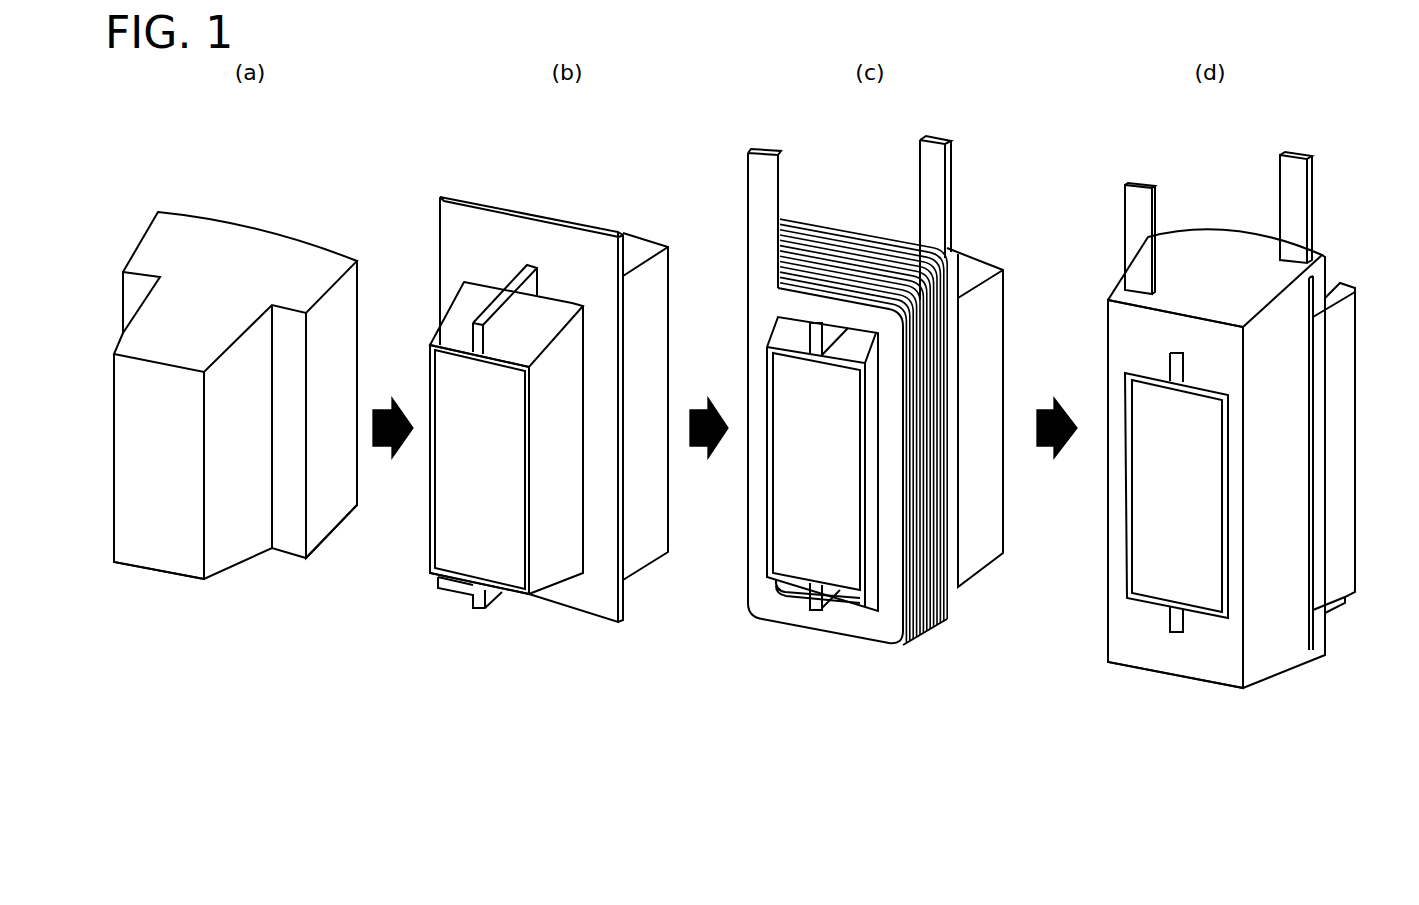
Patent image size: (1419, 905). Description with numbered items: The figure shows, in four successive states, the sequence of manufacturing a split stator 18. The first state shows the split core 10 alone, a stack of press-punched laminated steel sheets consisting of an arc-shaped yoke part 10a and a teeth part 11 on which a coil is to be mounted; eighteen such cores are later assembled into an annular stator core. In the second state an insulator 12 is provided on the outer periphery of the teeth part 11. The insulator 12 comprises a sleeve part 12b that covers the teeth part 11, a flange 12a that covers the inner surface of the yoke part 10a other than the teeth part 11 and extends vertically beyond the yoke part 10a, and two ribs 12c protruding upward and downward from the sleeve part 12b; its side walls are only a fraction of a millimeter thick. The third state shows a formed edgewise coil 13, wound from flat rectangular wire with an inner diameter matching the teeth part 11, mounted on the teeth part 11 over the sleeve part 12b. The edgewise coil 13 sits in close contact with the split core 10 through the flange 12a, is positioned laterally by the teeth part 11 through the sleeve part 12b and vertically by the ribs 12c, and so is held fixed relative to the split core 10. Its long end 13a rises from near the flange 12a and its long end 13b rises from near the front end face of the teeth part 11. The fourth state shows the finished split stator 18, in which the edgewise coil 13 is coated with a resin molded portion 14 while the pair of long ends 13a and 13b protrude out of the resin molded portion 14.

The split stator core 10 is at (273, 240).
The arc-shaped yoke part 10a is at (324, 523).
The teeth part 11 is at (232, 553).
The insulator 12 is at (843, 411).
The flange 12a is at (600, 602).
The sleeve part 12b is at (550, 573).
The ribs 12c is at (477, 333).
The edgewise coil 13 is at (1027, 369).
The long end 13a is at (932, 163).
The long end 13b is at (758, 163).
The resin molded portion 14 is at (1270, 662).
The split stator 18 is at (1339, 214).